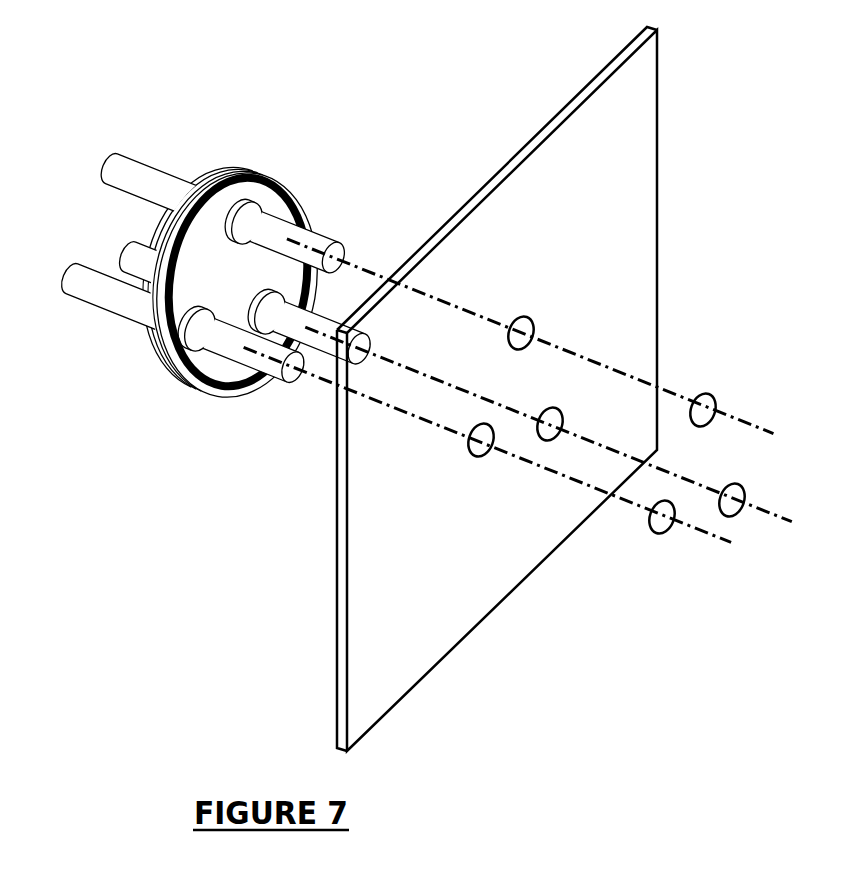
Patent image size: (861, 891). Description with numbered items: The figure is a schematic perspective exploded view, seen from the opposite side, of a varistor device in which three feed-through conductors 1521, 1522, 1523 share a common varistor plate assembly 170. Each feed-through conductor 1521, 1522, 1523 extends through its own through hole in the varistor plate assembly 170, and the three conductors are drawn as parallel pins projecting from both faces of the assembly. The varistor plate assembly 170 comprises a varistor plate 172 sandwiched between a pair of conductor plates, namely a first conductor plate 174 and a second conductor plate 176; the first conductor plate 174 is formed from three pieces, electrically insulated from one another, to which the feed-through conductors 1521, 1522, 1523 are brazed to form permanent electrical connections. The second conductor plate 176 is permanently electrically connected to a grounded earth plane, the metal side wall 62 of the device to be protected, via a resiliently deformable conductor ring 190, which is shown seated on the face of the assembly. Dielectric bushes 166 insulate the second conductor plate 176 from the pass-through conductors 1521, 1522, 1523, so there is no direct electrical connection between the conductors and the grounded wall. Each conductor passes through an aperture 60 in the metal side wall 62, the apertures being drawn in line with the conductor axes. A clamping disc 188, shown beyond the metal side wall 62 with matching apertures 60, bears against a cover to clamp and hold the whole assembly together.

The varistor plate assembly 170 is at (230, 293).
The varistor plate 172 is at (220, 167).
The first conductor plate 174 is at (157, 225).
The second conductor plate 176 is at (197, 283).
The resiliently deformable conductor ring 190 is at (287, 187).
The dielectric bush 166 is at (188, 347).
The feed-through conductor 1521 is at (116, 172).
The feed-through conductor 1522 is at (273, 365).
The feed-through conductor 1523 is at (328, 323).
The metal side wall 62 is at (539, 232).
The aperture 60 is at (523, 330).
The clamping disc 188 is at (712, 374).